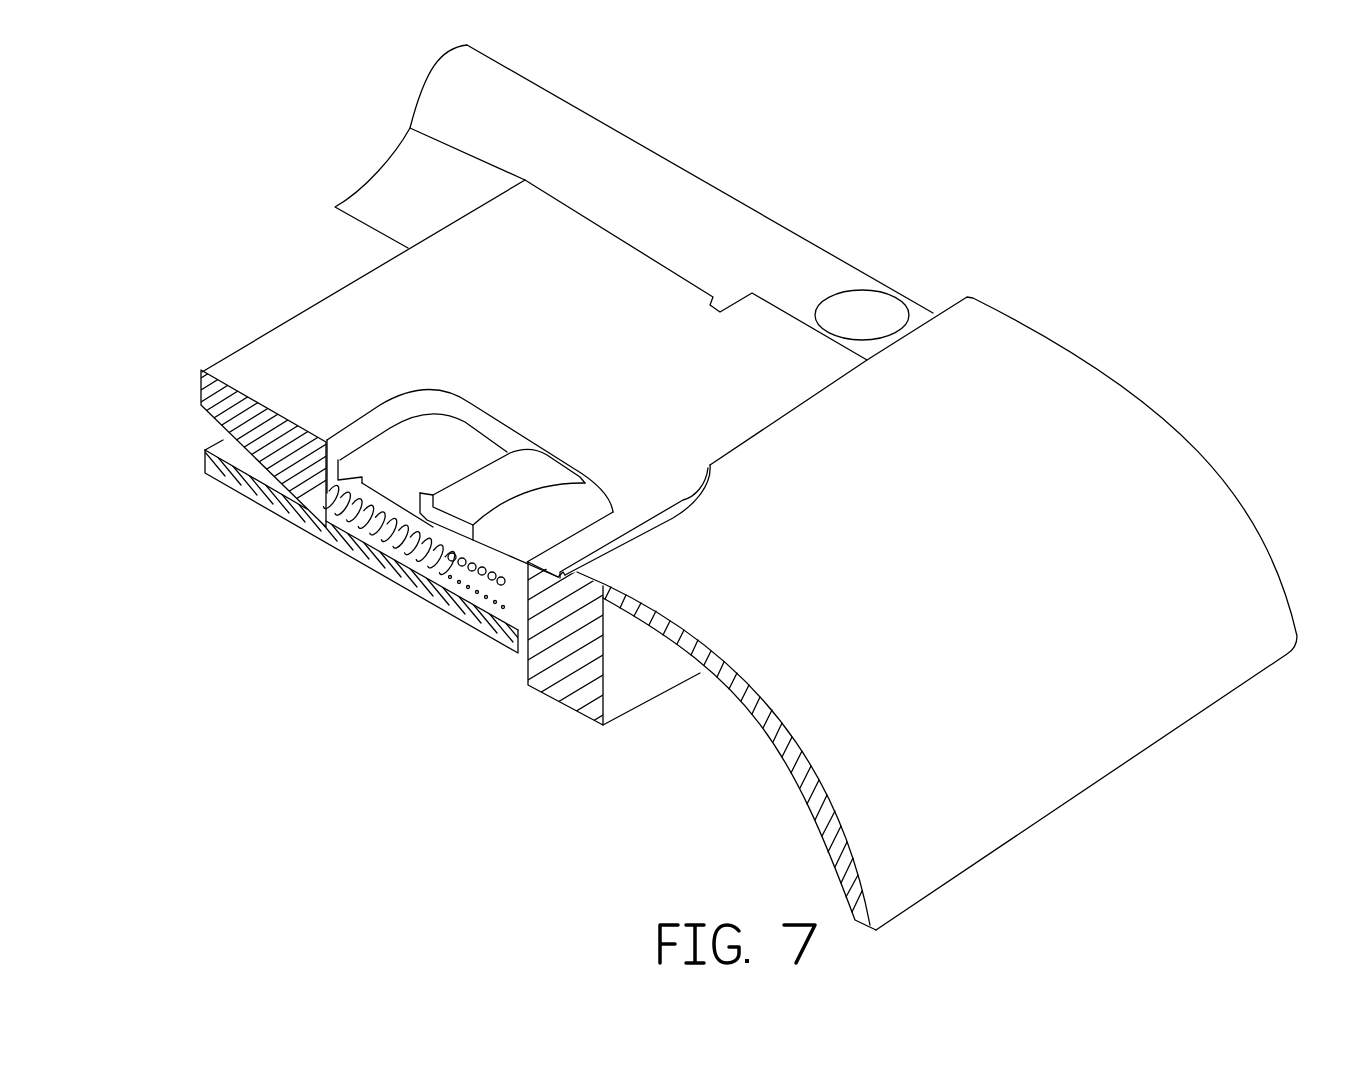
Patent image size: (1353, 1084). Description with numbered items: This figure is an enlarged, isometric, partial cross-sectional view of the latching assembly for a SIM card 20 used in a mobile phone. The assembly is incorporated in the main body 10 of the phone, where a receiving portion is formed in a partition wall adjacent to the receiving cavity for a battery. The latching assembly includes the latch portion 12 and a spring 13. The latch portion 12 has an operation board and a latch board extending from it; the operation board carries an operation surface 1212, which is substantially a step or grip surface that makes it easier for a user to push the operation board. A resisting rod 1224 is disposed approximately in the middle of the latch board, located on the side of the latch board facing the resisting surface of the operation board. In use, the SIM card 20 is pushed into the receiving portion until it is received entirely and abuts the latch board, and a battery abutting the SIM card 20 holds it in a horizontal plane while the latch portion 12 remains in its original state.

The main body 10 is at (978, 370).
The latch portion 12 is at (520, 652).
The spring 13 is at (358, 560).
The SIM card 20 is at (228, 480).
The operation surface 1212 is at (518, 477).
The resisting rod 1224 is at (477, 582).